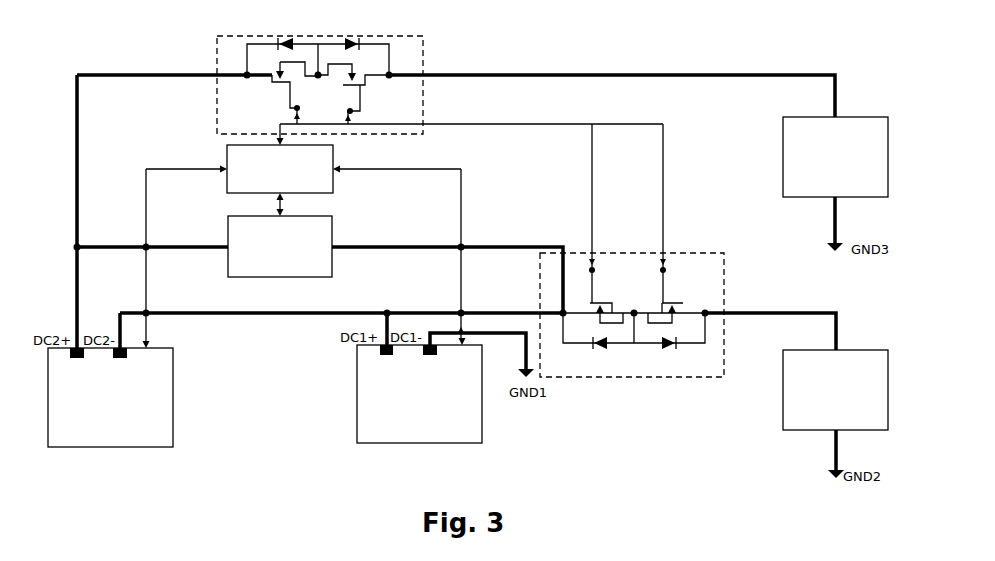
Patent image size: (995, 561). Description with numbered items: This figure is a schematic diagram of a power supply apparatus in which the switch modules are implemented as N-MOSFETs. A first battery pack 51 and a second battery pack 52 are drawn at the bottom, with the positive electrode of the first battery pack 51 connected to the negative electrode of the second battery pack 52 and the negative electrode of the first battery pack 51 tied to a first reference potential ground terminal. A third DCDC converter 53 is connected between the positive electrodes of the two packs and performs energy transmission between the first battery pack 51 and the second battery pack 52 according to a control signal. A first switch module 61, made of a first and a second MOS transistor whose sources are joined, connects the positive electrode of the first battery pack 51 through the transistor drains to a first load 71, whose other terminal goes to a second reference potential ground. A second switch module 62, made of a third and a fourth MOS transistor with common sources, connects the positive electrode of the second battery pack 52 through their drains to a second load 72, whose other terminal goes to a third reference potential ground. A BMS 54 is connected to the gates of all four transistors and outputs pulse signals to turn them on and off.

The first battery pack 51 is at (419, 394).
The second battery pack 52 is at (110, 397).
The third DCDC converter 53 is at (280, 246).
The BMS 54 is at (280, 169).
The first switch module 61 is at (710, 253).
The second switch module 62 is at (418, 36).
The first load 71 is at (835, 390).
The second load 72 is at (835, 157).